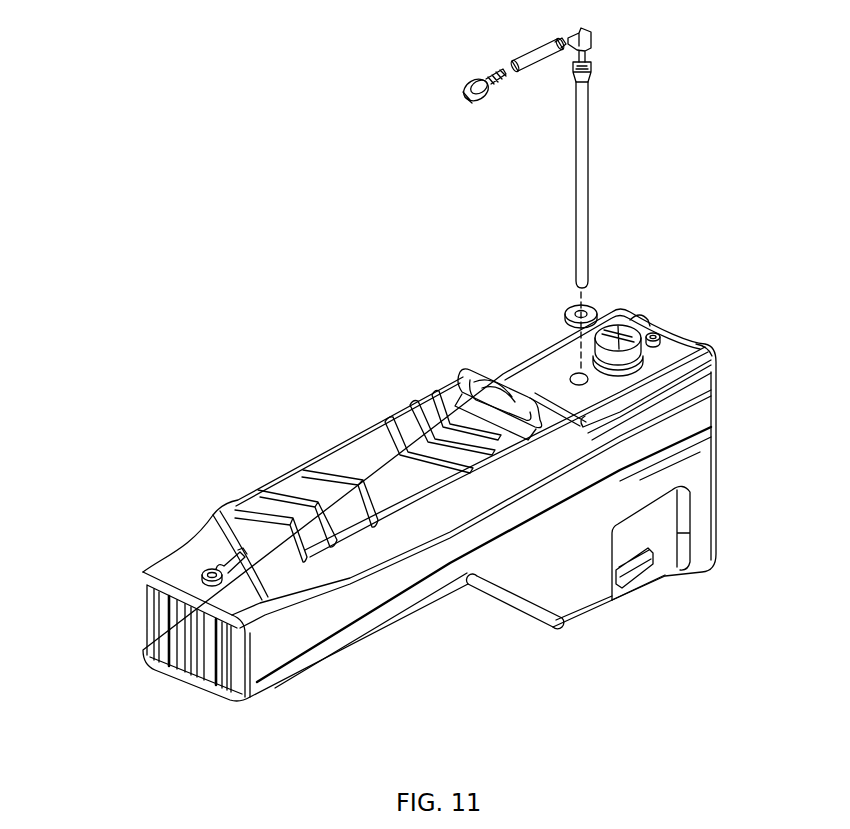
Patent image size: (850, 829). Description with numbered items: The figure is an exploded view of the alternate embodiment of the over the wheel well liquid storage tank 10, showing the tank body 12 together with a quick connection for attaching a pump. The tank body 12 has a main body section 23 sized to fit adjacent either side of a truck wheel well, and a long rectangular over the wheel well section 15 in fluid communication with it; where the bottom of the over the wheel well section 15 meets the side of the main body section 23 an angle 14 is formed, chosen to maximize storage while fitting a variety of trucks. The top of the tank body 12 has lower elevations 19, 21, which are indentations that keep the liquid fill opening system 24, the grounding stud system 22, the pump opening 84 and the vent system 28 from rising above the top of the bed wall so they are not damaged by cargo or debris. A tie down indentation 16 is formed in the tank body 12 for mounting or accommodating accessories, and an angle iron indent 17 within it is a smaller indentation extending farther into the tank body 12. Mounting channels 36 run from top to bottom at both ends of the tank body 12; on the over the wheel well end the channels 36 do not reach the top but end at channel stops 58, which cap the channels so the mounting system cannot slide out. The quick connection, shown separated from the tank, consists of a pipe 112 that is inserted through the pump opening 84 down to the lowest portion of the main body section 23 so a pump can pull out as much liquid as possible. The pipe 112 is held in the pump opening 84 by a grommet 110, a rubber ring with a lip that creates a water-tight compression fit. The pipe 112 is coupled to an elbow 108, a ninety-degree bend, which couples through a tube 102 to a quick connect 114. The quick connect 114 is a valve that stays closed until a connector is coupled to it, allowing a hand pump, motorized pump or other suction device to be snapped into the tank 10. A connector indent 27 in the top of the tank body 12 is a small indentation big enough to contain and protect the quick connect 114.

The over the wheel well liquid storage tank 10 is at (325, 368).
The tank body 12 is at (574, 578).
The angle 14 is at (480, 592).
The over the wheel well section 15 is at (343, 620).
The tie down indentation 16 is at (662, 553).
The angle iron indent 17 is at (637, 585).
The lower elevation 19 is at (633, 380).
The lower elevation 21 is at (200, 549).
The grounding stud system 22 is at (680, 337).
The main body section 23 is at (674, 467).
The liquid fill opening system 24 is at (657, 329).
The connector indent 27 is at (467, 372).
The vent system 28 is at (207, 570).
The mounting channels 36 is at (163, 621).
The channel stops 58 is at (158, 577).
The pump opening 84 is at (572, 373).
The tube 102 is at (530, 50).
The elbow 108 is at (588, 41).
The grommet 110 is at (592, 308).
The pipe 112 is at (589, 150).
The quick connect 114 is at (473, 78).